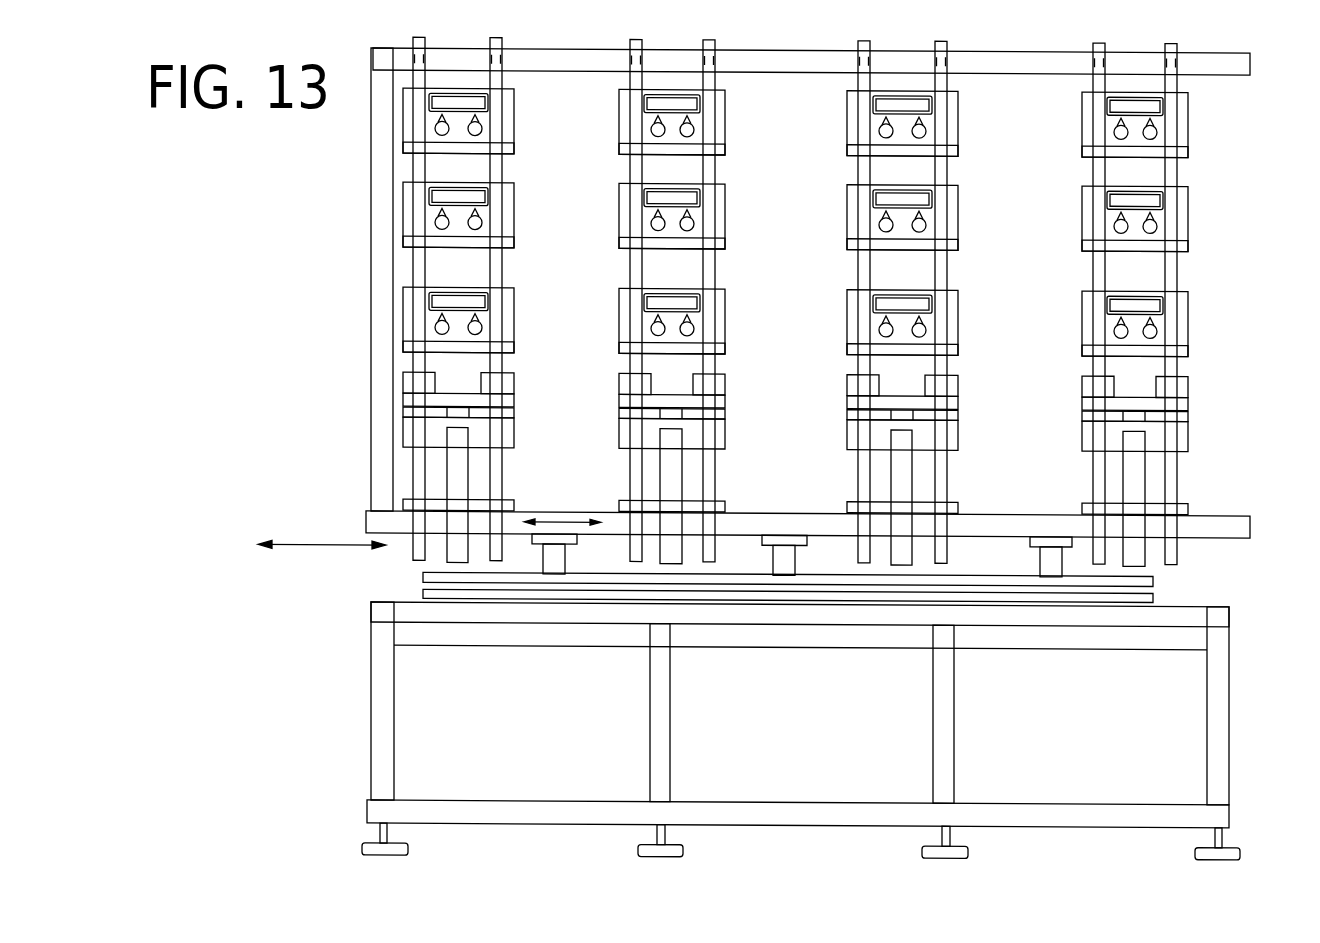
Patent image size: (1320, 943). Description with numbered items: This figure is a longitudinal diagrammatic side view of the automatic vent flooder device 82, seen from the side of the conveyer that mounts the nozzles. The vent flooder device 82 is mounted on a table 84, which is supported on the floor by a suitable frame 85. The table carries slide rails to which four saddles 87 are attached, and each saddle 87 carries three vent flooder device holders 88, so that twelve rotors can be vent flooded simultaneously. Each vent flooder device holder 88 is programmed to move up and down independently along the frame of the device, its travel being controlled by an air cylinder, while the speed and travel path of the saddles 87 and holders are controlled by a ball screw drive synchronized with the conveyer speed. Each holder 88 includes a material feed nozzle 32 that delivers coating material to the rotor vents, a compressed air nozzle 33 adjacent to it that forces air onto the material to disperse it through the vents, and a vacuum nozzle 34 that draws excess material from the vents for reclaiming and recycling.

The material feed nozzle 32 is at (437, 126).
The compressed air nozzle 33 is at (477, 126).
The vacuum nozzle 34 is at (458, 100).
The vent flooder device 82 is at (763, 44).
The table 84 is at (1187, 608).
The frame 85 is at (1230, 699).
The saddle 87 is at (619, 430).
The vent flooder device holder 88 is at (771, 190).